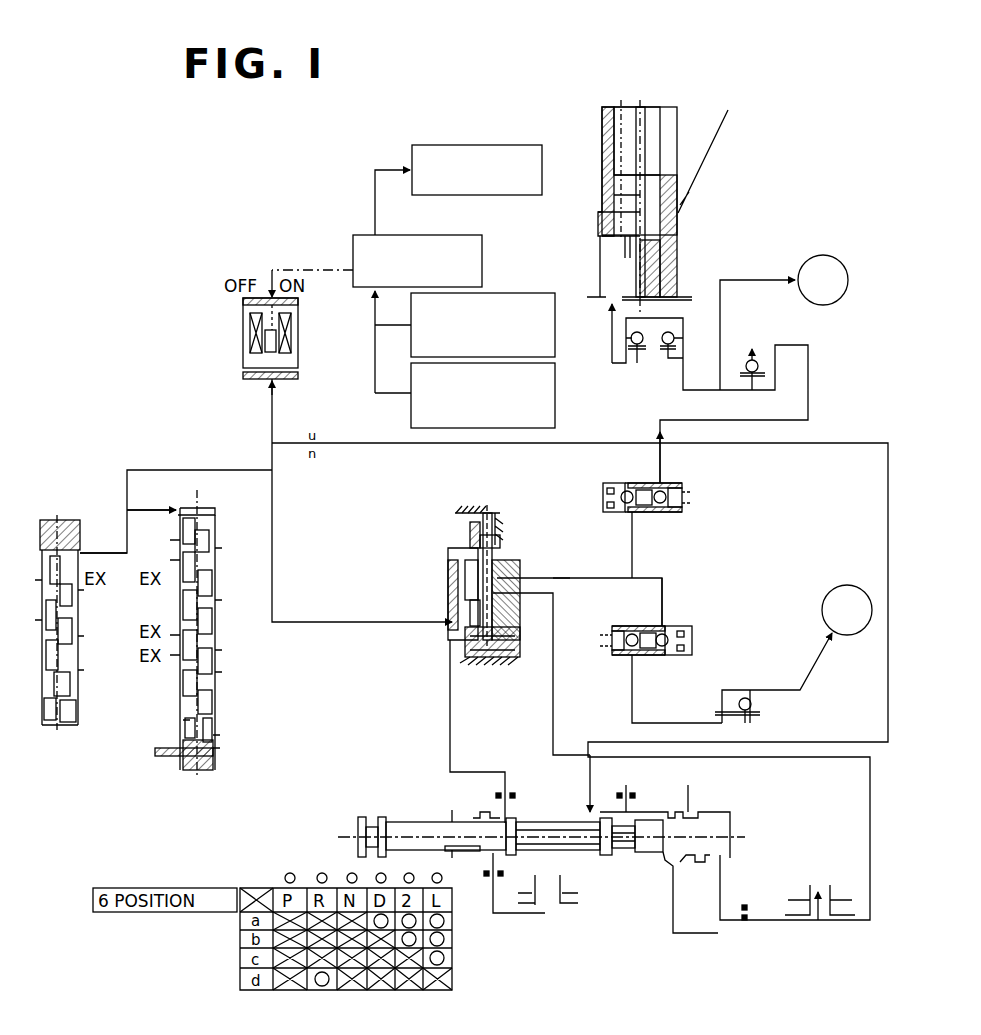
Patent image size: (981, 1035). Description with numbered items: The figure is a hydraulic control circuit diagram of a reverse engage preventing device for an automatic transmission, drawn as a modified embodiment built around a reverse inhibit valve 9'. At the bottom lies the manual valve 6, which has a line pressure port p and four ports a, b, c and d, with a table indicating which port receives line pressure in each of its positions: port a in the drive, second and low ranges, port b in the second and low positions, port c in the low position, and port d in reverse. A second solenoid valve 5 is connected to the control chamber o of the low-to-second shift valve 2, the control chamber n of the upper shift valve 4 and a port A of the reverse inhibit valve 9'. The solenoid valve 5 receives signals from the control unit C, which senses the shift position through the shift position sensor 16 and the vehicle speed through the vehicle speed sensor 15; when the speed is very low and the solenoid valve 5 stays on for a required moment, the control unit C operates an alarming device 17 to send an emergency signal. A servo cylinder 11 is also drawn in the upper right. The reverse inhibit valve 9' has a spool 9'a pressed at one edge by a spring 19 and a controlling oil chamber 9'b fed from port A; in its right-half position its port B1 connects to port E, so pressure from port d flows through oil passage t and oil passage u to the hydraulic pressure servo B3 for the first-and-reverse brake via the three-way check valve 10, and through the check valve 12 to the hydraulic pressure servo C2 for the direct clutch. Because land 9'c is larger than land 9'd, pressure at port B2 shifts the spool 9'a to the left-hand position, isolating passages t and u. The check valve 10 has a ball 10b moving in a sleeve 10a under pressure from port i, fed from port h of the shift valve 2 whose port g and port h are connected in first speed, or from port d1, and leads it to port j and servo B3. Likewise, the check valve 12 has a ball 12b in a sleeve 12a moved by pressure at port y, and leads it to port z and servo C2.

The alarming device 17 is at (488, 145).
The control unit C is at (482, 262).
The vehicle speed sensor 15 is at (528, 293).
The shift position sensor 16 is at (555, 393).
The second solenoid valve 5 is at (243, 312).
The servo cylinder 11 is at (680, 137).
The hydraulic pressure servo for the direct clutch C2 is at (823, 280).
The three-way check valve 12 is at (665, 501).
The sleeve 12a is at (628, 482).
The ball 12b is at (665, 512).
The port z is at (662, 478).
The port y is at (634, 516).
The oil passage u is at (562, 580).
The three-way check valve 10 is at (671, 641).
The sleeve 10a is at (636, 626).
The ball 10b is at (640, 655).
The port i is at (628, 622).
The port d1 is at (664, 622).
The port j is at (628, 658).
The hydraulic pressure servo for the 1st & Rev. brake B3 is at (847, 610).
The reverse inhibit valve 9' is at (492, 562).
The spool 9'a is at (519, 542).
The controlling oil chamber 9'b is at (542, 565).
The land 9'c is at (529, 510).
The land 9'd is at (504, 492).
The port E is at (500, 592).
The spring 19 is at (505, 612).
The port A is at (470, 625).
The port B1 is at (463, 568).
The port B2 is at (462, 548).
The oil passage t is at (452, 688).
The 3-4 shift valve 4 is at (62, 514).
The control chamber n is at (80, 553).
The control chamber o is at (175, 505).
The 1-2 shift valve 2 is at (222, 522).
The port h is at (220, 655).
The port g is at (215, 683).
The manual valve 6 is at (362, 800).
The port d is at (508, 812).
The line pressure port p is at (586, 808).
The port a is at (630, 800).
The port b is at (672, 866).
The port c is at (690, 810).